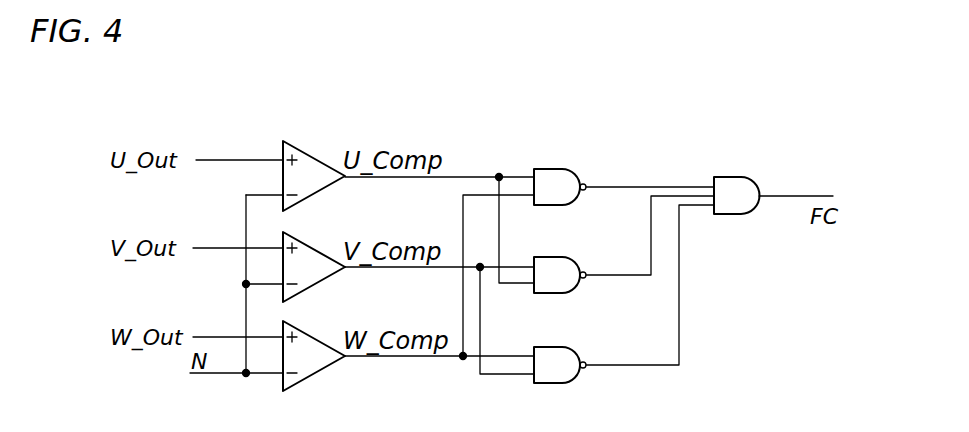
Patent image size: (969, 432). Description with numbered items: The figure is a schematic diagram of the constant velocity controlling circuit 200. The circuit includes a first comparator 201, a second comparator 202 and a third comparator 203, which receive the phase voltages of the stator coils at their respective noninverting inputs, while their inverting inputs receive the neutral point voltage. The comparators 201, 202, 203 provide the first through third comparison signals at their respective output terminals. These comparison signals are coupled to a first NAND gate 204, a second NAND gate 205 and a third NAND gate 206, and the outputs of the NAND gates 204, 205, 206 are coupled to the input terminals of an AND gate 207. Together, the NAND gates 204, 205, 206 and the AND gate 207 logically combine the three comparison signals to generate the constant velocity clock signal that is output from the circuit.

The constant velocity controlling circuit 200 is at (498, 116).
The first comparator 201 is at (312, 154).
The second comparator 202 is at (312, 245).
The third comparator 203 is at (312, 334).
The first NAND gate 204 is at (556, 169).
The second NAND gate 205 is at (556, 257).
The third NAND gate 206 is at (556, 347).
The AND gate 207 is at (737, 177).